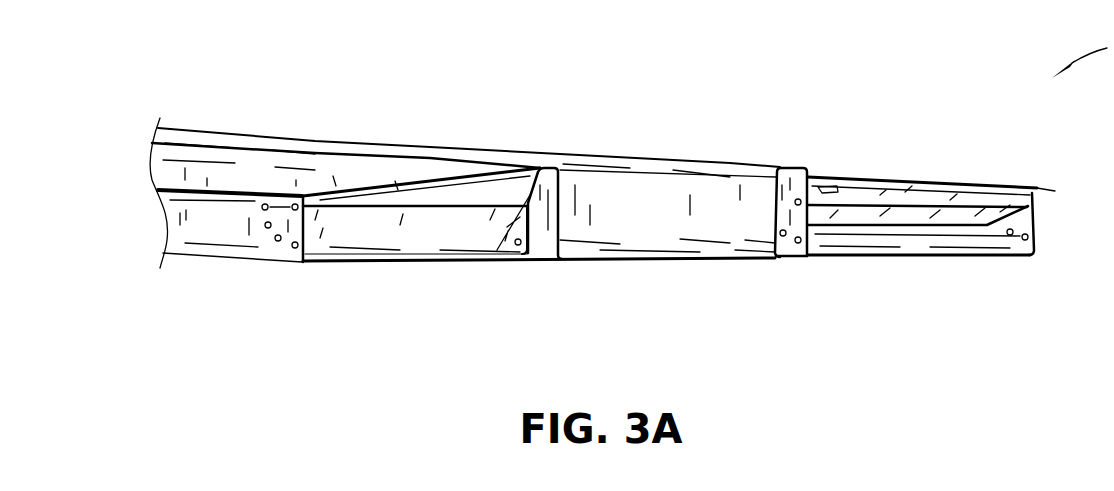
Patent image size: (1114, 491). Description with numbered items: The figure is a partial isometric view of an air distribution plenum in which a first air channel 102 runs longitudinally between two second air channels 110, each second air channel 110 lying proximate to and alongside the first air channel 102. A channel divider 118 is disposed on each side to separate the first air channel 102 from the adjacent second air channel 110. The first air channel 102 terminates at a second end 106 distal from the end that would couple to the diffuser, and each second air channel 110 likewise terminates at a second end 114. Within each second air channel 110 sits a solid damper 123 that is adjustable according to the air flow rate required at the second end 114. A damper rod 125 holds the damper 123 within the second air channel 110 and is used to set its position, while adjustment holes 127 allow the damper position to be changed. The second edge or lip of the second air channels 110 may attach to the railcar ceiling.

The first air channel 102 is at (625, 255).
The second end 106 is at (690, 287).
The second air channel 110 is at (428, 263).
The second end 114 is at (332, 302).
The channel divider 118 is at (542, 166).
The solid damper 123 is at (372, 227).
The damper rod 125 is at (798, 199).
The adjustment holes 127 is at (276, 239).